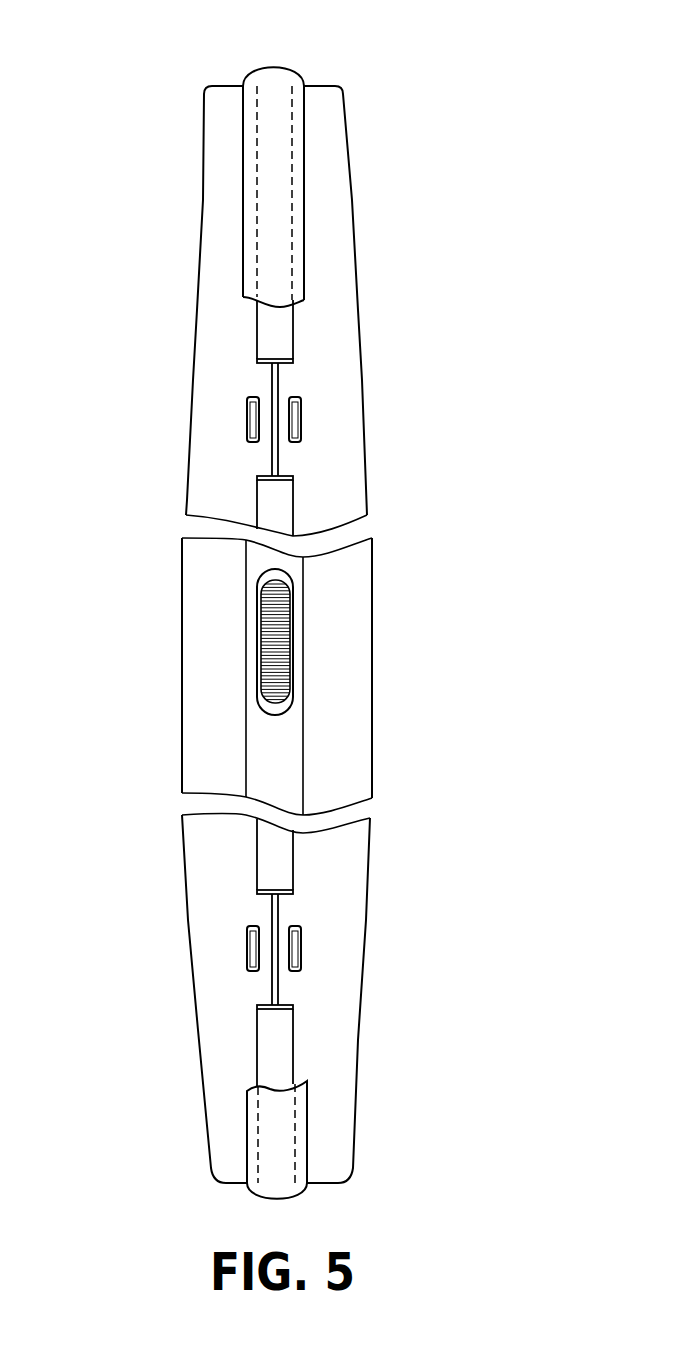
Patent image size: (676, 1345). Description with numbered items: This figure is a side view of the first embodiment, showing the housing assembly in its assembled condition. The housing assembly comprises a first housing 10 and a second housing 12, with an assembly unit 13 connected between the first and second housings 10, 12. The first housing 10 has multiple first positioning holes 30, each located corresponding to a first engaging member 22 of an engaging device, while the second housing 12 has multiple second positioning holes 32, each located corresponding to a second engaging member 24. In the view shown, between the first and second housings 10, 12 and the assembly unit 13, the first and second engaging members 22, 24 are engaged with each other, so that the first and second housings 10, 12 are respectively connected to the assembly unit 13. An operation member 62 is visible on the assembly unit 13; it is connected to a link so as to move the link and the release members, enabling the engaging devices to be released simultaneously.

The first housing 10 is at (202, 339).
The second housing 12 is at (345, 339).
The assembly unit 13 is at (276, 80).
The first engaging member 22 is at (247, 417).
The second engaging member 24 is at (297, 416).
The first positioning hole 30 is at (252, 442).
The second positioning hole 32 is at (300, 443).
The operation member 62 is at (273, 637).